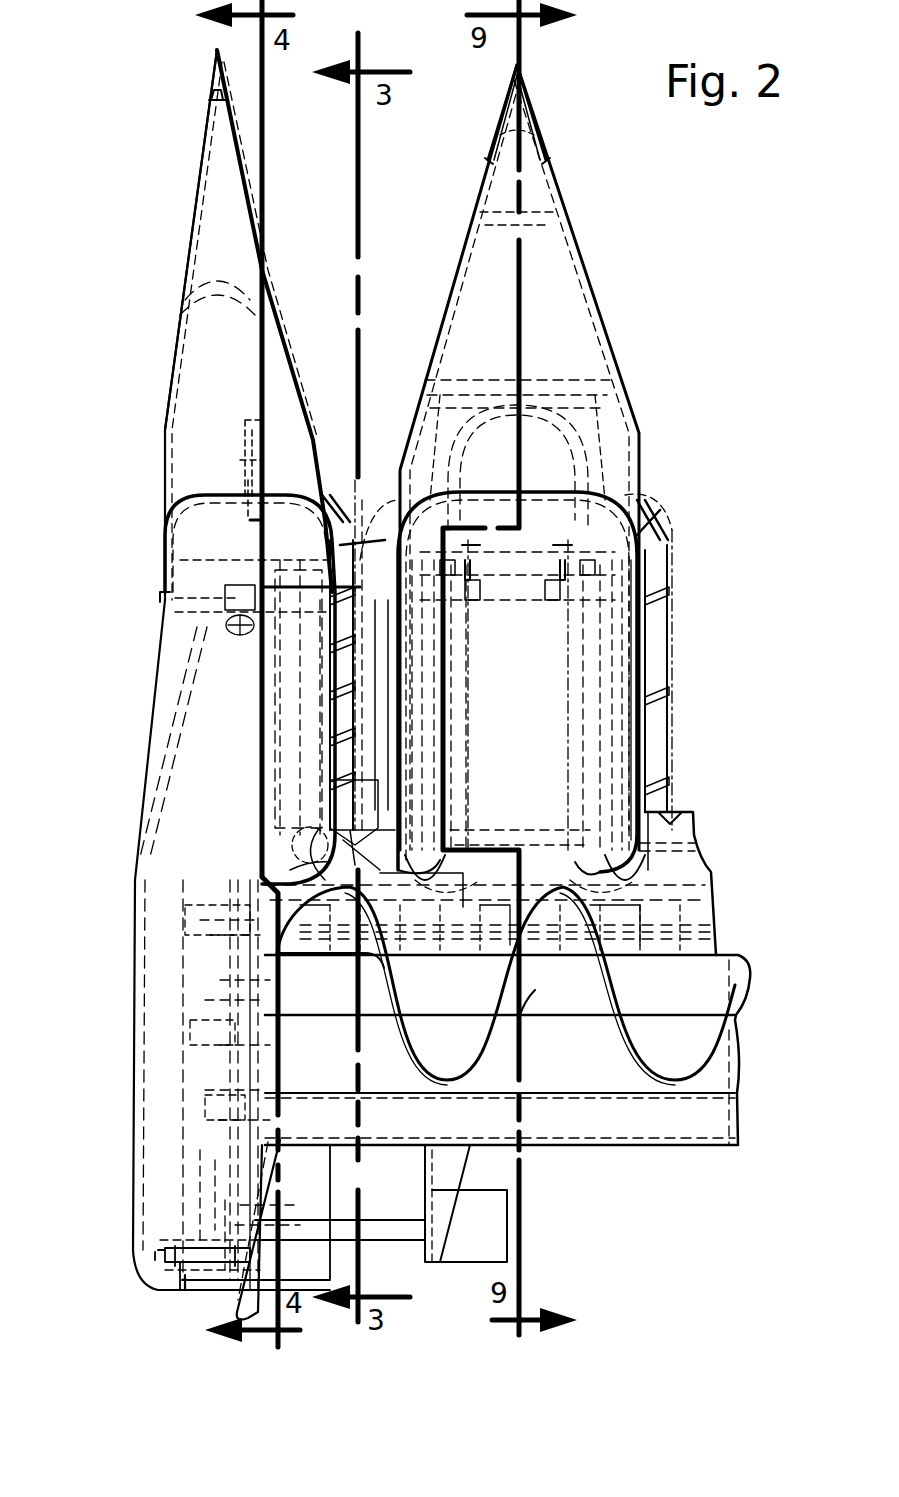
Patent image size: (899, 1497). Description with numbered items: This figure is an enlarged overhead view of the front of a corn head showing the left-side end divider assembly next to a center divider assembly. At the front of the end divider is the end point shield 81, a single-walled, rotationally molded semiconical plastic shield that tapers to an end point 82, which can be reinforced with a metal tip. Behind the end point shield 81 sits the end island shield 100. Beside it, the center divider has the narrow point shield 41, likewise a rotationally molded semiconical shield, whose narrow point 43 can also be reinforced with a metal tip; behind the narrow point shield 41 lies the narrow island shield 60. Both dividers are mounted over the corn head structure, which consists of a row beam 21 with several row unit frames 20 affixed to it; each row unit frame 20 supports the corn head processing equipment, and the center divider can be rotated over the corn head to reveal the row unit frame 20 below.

The end island shield 100 is at (157, 690).
The end point shield 81 is at (172, 345).
The end point 82 is at (215, 97).
The narrow point shield 41 is at (590, 275).
The narrow point 43 is at (533, 110).
The narrow island shield 60 is at (668, 612).
The row unit frame 20 is at (650, 732).
The row beam 21 is at (687, 883).